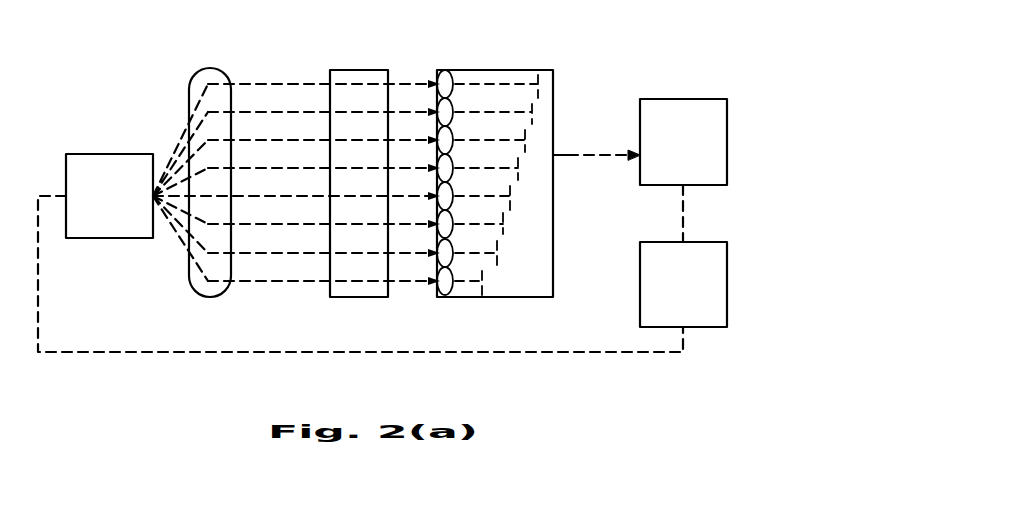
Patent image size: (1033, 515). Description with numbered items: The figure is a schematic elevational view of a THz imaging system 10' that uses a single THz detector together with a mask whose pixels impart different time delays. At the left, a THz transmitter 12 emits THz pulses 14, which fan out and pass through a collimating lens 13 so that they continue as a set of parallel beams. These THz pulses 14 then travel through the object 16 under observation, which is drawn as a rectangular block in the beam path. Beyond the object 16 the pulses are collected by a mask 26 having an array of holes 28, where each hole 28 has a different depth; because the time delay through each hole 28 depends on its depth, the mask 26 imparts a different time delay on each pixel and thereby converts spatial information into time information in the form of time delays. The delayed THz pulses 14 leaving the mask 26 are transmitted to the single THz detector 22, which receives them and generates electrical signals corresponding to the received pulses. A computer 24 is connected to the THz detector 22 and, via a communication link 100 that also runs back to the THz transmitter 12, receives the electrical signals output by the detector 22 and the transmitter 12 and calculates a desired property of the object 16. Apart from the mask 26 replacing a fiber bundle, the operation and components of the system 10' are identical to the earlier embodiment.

The THz imaging system 10' is at (654, 36).
The THz transmitter 12 is at (100, 154).
The collimating lens 13 is at (205, 68).
The THz pulses 14 is at (568, 155).
The object 16 is at (358, 297).
The THz detector 22 is at (668, 99).
The computer 24 is at (692, 327).
The mask 26 is at (468, 297).
The mask holes 28 is at (471, 87).
The communication link 100 is at (150, 350).